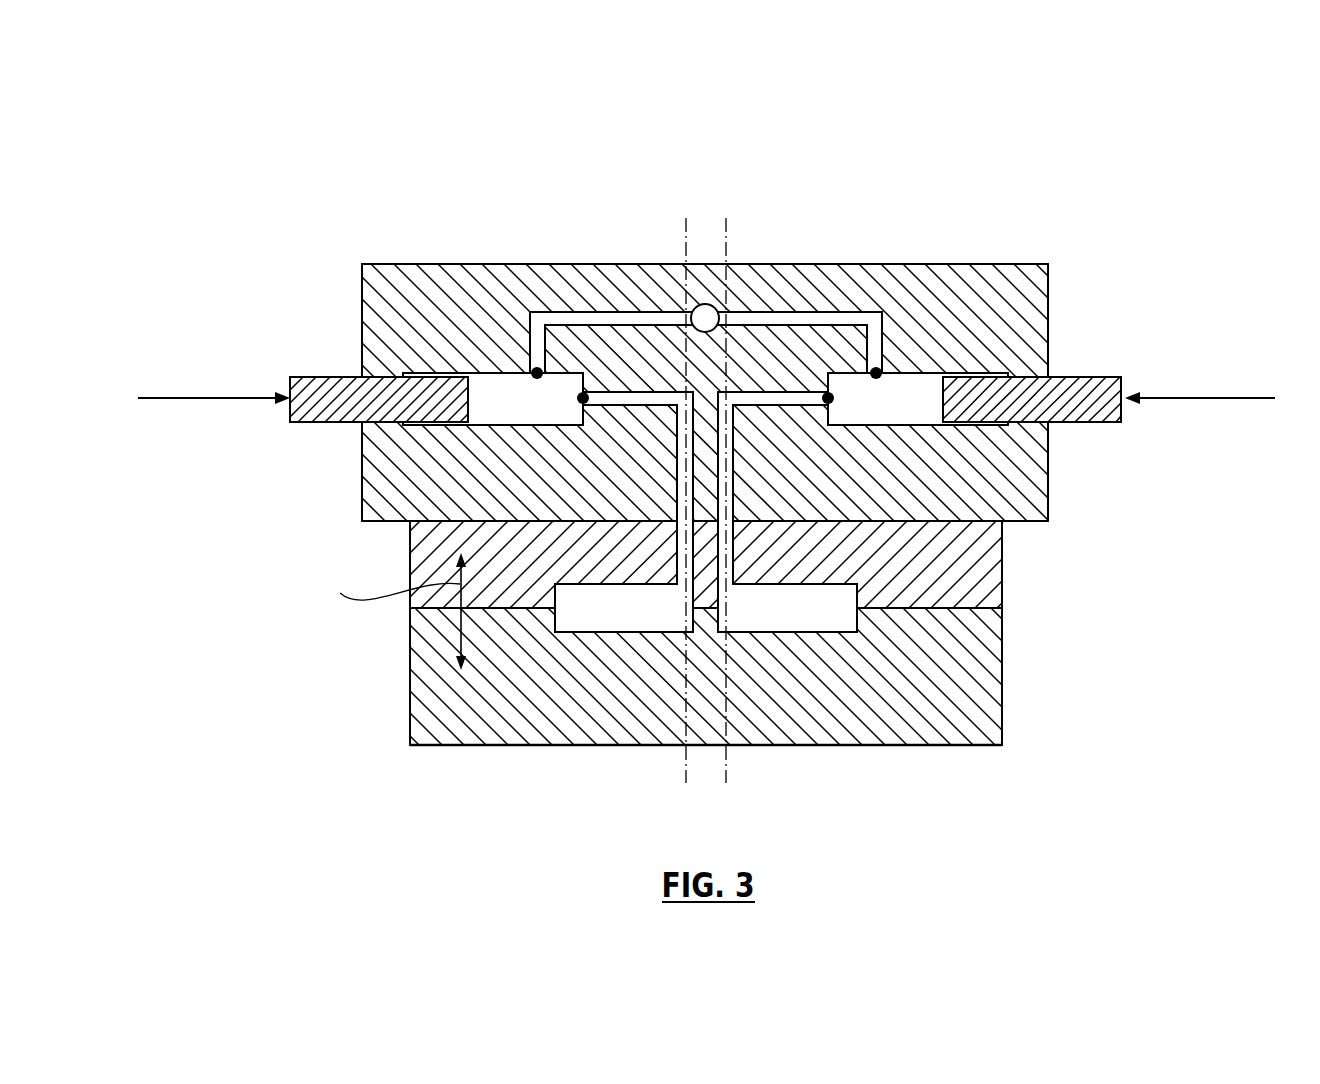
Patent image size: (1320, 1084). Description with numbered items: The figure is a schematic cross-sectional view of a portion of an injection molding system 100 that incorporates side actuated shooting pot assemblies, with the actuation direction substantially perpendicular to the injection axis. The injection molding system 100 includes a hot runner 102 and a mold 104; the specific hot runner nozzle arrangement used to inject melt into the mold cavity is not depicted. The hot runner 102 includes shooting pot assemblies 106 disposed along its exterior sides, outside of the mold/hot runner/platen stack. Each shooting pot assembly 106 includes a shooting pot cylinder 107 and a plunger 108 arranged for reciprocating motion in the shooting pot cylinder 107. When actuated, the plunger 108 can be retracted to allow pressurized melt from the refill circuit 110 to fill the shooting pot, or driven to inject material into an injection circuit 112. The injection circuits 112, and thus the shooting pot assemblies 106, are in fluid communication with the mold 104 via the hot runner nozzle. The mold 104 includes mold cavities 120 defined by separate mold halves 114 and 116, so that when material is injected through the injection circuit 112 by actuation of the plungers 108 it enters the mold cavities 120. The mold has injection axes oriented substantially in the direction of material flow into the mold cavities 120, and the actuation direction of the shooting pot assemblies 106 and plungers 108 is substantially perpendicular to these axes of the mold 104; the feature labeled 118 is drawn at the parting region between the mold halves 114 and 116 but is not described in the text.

The injection molding system 100 is at (706, 464).
The hot runner 102 is at (1050, 327).
The mold 104 is at (805, 661).
The shooting pot assembly 106 is at (706, 268).
The shooting pot cylinder 107 is at (523, 390).
The plunger 108 is at (433, 390).
The refill circuit 110 is at (698, 305).
The injection circuit 112 is at (706, 489).
The mold half 114 is at (978, 552).
The mold half 116 is at (978, 667).
The parting line 118 is at (937, 610).
The mold cavity 120 is at (600, 615).